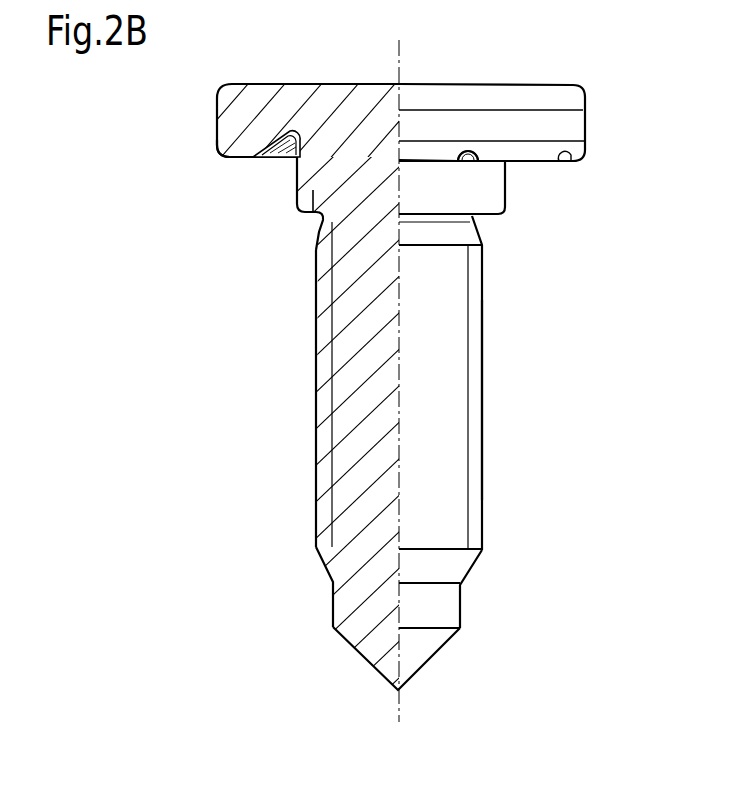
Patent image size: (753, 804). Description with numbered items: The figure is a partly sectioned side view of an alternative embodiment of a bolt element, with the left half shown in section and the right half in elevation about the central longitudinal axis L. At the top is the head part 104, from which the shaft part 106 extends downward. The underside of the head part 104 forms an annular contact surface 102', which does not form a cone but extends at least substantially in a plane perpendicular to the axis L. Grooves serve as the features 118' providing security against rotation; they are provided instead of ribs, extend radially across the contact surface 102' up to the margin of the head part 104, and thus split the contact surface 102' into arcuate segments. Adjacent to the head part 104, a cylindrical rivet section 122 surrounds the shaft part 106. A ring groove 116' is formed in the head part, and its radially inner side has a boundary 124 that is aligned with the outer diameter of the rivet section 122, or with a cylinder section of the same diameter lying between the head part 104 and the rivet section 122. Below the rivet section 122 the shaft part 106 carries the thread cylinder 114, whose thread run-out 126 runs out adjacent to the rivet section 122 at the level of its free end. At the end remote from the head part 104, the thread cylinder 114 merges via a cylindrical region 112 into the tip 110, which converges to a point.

The head part 104 is at (473, 126).
The boundary 124 is at (304, 128).
The annular contact surface 102' is at (195, 186).
The ring groove 116' is at (252, 200).
The thread run-out 126 is at (320, 229).
The cylindrical rivet section 122 is at (490, 172).
The features providing security against rotation 118' is at (563, 196).
The thread cylinder 114 is at (445, 310).
The shaft part 106 is at (513, 402).
The cylindrical region 112 is at (443, 608).
The tip 110 is at (410, 658).
The central longitudinal axis L is at (392, 714).